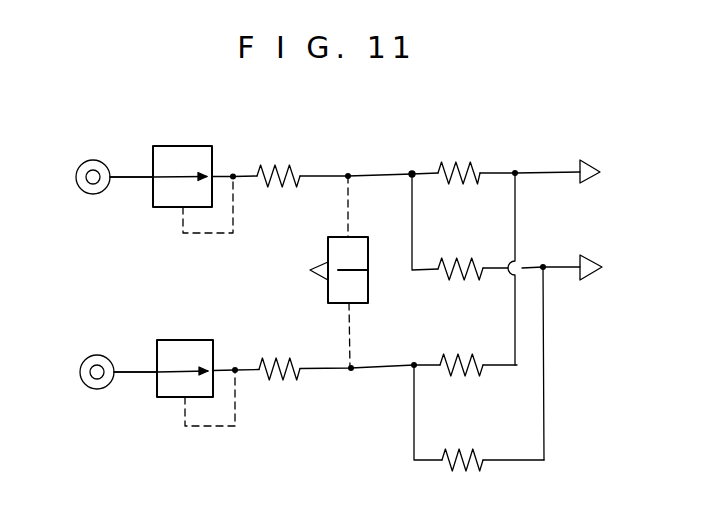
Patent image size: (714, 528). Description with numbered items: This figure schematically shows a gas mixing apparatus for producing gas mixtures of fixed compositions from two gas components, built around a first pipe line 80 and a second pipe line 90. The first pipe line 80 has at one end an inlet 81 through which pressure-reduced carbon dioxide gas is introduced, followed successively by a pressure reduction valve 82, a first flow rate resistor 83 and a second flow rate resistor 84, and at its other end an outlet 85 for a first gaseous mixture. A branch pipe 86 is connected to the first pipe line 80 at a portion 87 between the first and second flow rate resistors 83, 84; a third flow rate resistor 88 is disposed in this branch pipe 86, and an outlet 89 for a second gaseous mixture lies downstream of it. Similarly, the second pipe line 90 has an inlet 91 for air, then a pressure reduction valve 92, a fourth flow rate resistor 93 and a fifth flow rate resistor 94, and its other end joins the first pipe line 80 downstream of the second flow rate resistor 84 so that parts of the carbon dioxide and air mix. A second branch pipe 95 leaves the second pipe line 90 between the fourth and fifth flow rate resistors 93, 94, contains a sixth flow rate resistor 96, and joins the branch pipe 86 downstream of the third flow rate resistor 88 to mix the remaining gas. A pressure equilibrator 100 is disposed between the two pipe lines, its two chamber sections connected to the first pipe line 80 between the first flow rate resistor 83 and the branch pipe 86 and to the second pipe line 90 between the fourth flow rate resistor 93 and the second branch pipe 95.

The first pipe line 80 is at (129, 182).
The inlet 81 is at (83, 163).
The pressure reduction valve 82 is at (173, 146).
The first flow rate resistor 83 is at (285, 165).
The second flow rate resistor 84 is at (460, 162).
The outlet 85 is at (592, 157).
The branch pipe 86 is at (412, 227).
The portion 87 is at (412, 172).
The third flow rate resistor 88 is at (463, 258).
The outlet 89 is at (583, 279).
The second pipe line 90 is at (130, 366).
The inlet 91 is at (95, 390).
The pressure reduction valve 92 is at (166, 398).
The fourth flow rate resistor 93 is at (287, 378).
The fifth flow rate resistor 94 is at (459, 353).
The second branch pipe 95 is at (414, 418).
The sixth flow rate resistor 96 is at (467, 448).
The pressure equilibrator 100 is at (328, 288).